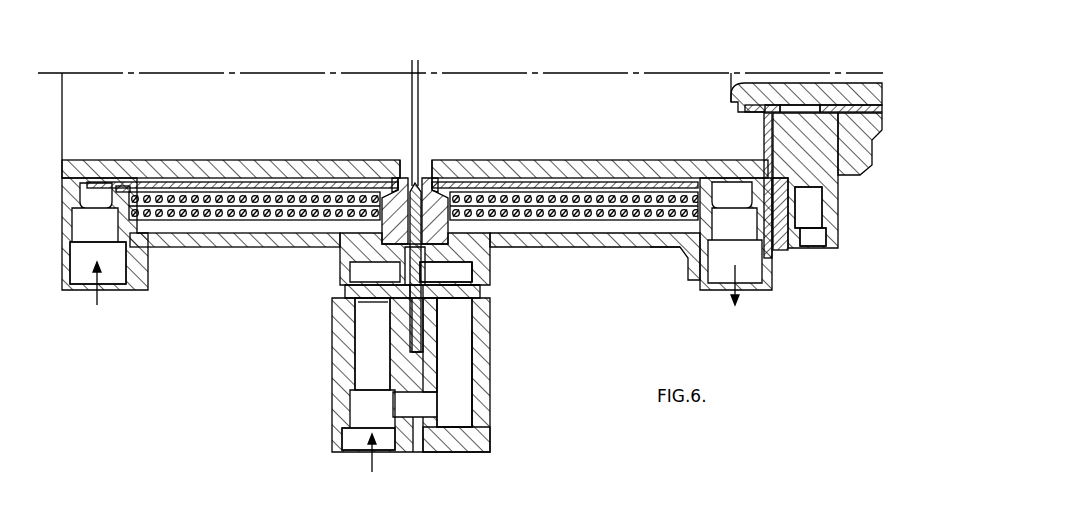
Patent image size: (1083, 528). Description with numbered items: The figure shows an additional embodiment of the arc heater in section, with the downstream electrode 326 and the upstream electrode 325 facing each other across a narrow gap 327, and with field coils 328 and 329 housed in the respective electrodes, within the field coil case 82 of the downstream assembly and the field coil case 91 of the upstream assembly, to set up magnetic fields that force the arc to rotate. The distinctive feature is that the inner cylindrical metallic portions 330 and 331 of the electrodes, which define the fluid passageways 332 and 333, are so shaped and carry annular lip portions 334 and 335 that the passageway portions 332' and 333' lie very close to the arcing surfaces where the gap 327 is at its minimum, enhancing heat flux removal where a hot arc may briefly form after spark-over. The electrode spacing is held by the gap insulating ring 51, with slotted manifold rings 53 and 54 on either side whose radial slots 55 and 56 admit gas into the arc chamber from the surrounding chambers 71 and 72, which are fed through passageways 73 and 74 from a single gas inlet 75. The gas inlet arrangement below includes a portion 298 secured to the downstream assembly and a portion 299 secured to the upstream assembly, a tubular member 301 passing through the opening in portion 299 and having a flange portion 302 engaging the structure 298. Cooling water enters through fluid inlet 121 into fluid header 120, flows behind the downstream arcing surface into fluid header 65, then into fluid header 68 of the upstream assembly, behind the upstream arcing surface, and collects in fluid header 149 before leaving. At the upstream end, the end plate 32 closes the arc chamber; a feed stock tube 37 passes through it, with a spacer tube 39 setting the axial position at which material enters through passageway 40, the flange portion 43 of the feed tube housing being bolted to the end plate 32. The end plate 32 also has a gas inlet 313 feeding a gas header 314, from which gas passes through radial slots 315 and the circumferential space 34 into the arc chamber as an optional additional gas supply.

The end plate 32 is at (838, 220).
The space 34 is at (770, 148).
The feed stock tube 37 is at (731, 100).
The spacer tube 39 is at (760, 112).
The passageway 40 is at (729, 80).
The flange portion 43 is at (862, 162).
The gap insulating ring 51 is at (440, 334).
The slotted manifold ring 53 is at (345, 268).
The slotted manifold ring 54 is at (475, 262).
The slots 55 is at (350, 283).
The slots 56 is at (478, 286).
The fluid header 65 is at (338, 258).
The fluid header 68 is at (468, 249).
The chamber 71 is at (378, 300).
The chamber 72 is at (468, 310).
The passageway 73 is at (368, 346).
The passageway 74 is at (465, 375).
The gas inlet 75 is at (353, 447).
The field coil case 82 is at (262, 240).
The field coil case 91 is at (617, 243).
The fluid header 120 is at (99, 183).
The fluid inlet 121 is at (76, 264).
The fluid header 149 is at (736, 204).
The gas inlet structure 298 is at (342, 370).
The portion 299 is at (485, 402).
The tubular member 301 is at (457, 450).
The flange portion 302 is at (408, 452).
The gas inlet 313 is at (815, 250).
The gas header 314 is at (779, 250).
The slots 315 is at (805, 192).
The upstream electrode 325 is at (575, 165).
The downstream electrode 326 is at (228, 166).
The gap 327 is at (418, 175).
The field coil 328 is at (149, 192).
The field coil 329 is at (657, 218).
The inner cylindrical metallic portion 330 is at (270, 185).
The inner cylindrical metallic portion 331 is at (640, 190).
The fluid passageway 332 is at (254, 176).
The fluid passageway portion 332' is at (389, 148).
The fluid passageway 333 is at (574, 171).
The fluid passageway portion 333' is at (464, 148).
The annular lip portion 334 is at (393, 180).
The annular lip portion 335 is at (448, 182).